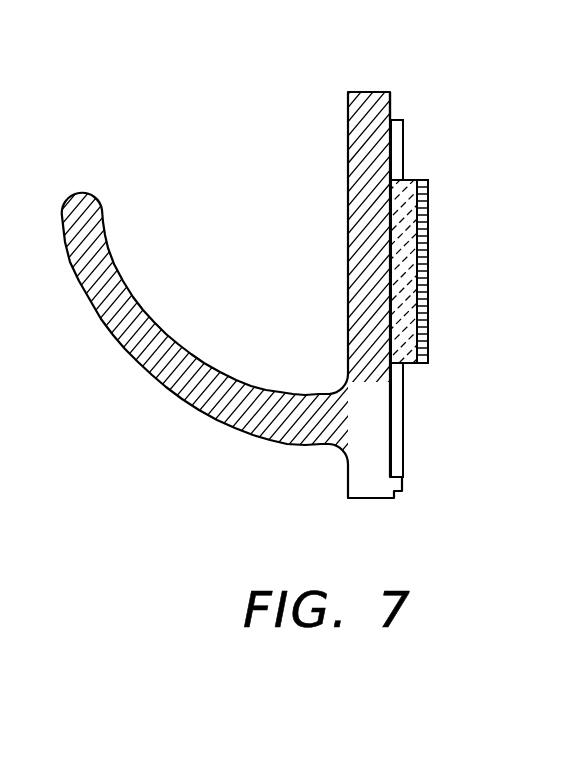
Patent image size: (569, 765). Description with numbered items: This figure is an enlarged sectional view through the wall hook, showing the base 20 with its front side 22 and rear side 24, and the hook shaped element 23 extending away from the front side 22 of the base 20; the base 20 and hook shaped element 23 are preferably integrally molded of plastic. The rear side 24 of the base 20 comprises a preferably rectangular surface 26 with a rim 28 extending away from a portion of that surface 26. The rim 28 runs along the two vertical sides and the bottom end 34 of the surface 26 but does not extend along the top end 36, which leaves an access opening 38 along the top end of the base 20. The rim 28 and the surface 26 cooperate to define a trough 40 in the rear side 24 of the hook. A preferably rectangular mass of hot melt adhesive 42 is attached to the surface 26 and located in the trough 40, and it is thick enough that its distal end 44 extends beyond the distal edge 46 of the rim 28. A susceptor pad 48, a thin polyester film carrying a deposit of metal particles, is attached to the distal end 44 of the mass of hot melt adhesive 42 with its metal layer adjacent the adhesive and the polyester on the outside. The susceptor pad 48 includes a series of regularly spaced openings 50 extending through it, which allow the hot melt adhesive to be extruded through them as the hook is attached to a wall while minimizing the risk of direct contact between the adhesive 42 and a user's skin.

The base 20 is at (373, 482).
The front side 22 is at (349, 222).
The hook shaped element 23 is at (177, 402).
The rear side 24 is at (396, 151).
The surface 26 is at (398, 110).
The rim 28 is at (398, 410).
The bottom end 34 is at (365, 498).
The top end 36 is at (370, 92).
The access opening 38 is at (405, 102).
The trough 40 is at (402, 455).
The mass of hot melt adhesive 42 is at (405, 213).
The distal end 44 is at (428, 338).
The distal edge 46 is at (402, 380).
The susceptor pad 48 is at (428, 251).
The openings 50 is at (424, 305).